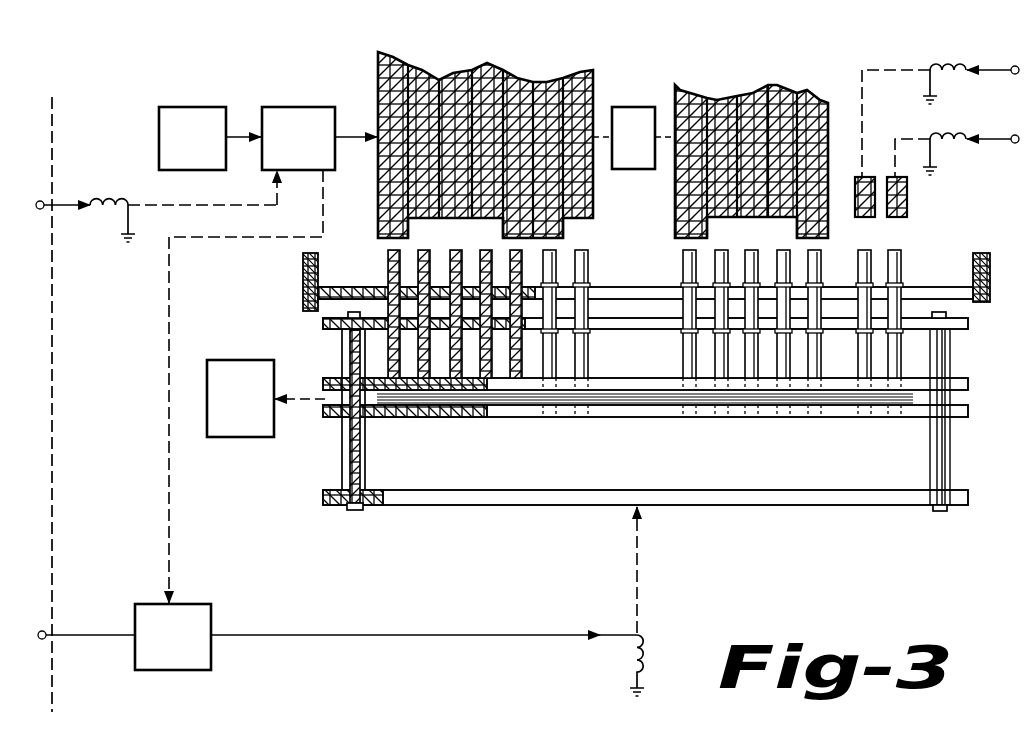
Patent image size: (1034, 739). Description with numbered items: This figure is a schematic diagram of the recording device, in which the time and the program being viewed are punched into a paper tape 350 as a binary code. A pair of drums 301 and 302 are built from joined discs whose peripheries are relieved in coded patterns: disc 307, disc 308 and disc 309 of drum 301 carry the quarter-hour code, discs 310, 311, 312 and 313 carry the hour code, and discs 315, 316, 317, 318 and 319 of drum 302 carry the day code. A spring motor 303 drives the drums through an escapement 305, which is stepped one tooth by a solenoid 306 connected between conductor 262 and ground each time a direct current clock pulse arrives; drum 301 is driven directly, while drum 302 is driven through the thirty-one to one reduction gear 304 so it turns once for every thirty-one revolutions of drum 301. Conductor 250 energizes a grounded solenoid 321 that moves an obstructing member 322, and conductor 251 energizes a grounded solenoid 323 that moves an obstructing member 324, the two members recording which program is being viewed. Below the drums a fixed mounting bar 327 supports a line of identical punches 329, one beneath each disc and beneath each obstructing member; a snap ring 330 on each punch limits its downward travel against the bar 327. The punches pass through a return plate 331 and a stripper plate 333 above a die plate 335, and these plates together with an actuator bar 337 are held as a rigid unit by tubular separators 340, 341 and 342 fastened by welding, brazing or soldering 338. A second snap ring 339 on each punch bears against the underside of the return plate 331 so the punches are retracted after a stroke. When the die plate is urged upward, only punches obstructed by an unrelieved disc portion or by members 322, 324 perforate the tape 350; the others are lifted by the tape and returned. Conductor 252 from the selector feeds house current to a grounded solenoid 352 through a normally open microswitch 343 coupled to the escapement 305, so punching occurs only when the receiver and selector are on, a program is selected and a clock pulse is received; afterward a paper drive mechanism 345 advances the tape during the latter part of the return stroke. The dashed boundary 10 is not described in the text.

The printer system boundary 10 is at (52, 462).
The conductor 250 is at (997, 72).
The conductor 251 is at (995, 142).
The conductor 252 is at (102, 634).
The conductor 262 is at (72, 208).
The drum 301 is at (495, 145).
The drum 302 is at (751, 161).
The spring motor 303 is at (194, 107).
The 31:1 reduction gear 304 is at (624, 169).
The escapement 305 is at (301, 107).
The solenoid 306 is at (113, 200).
The disc 307 is at (402, 53).
The disc 308 is at (419, 64).
The disc 309 is at (469, 70).
The disc 310 is at (491, 62).
The disc 311 is at (520, 76).
The disc 312 is at (542, 78).
The disc 313 is at (584, 72).
The disc 315 is at (682, 88).
The disc 316 is at (717, 96).
The disc 317 is at (752, 92).
The disc 318 is at (788, 90).
The disc 319 is at (820, 98).
The solenoid 321 is at (956, 66).
The obstructing member 322 is at (873, 217).
The solenoid 323 is at (956, 136).
The obstructing member 324 is at (889, 217).
The mounting bar 327 is at (318, 292).
The punches 329 is at (388, 280).
The snap ring 330 is at (687, 284).
The return plate 331 is at (968, 329).
The stripper plate 333 is at (968, 382).
The die plate 335 is at (968, 417).
The actuator bar 337 is at (968, 494).
The welding, brazing or soldering 338 is at (930, 488).
The second snap ring 339 is at (343, 314).
The tubular separator 340 is at (342, 342).
The tubular separator 341 is at (968, 400).
The tubular separator 342 is at (346, 472).
The microswitch 343 is at (198, 604).
The paper drive mechanism 345 is at (242, 437).
The paper tape 350 is at (629, 404).
The solenoid 352 is at (631, 662).